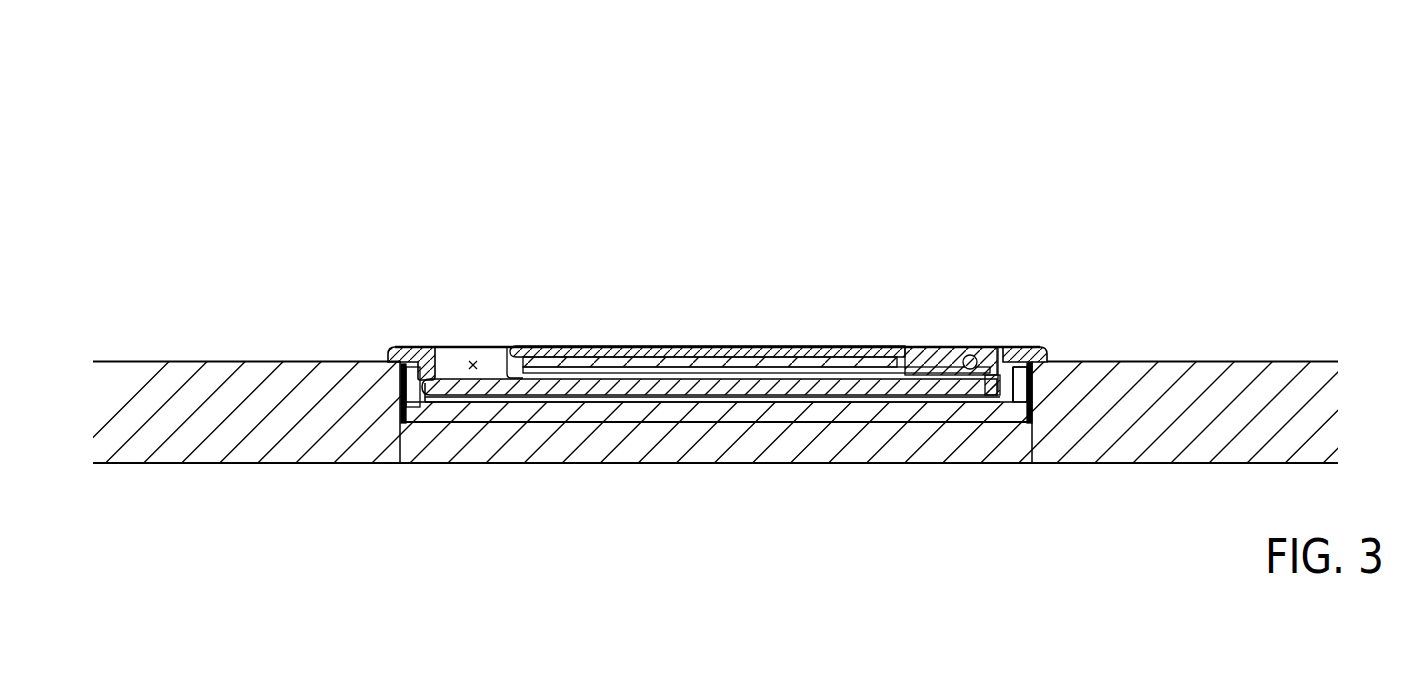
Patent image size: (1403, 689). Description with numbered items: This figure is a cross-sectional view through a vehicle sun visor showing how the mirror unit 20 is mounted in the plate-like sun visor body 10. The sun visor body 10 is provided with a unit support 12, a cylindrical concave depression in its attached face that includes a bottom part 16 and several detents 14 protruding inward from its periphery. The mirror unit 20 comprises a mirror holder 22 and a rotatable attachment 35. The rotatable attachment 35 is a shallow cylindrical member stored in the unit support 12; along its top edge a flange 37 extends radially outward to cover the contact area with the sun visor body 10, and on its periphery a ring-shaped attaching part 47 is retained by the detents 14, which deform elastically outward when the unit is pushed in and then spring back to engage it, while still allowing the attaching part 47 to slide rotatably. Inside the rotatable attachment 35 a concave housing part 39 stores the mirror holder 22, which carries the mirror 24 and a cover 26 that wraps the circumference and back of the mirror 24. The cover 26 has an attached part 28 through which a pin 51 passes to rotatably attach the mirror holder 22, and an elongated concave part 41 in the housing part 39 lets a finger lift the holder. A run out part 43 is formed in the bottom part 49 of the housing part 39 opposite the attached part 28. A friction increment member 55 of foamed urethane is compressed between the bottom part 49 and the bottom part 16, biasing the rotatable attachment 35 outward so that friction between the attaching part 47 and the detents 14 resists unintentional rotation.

The sun visor body 10 is at (1216, 455).
The unit support 12 is at (1012, 398).
The detents 14 is at (400, 373).
The bottom part 16 is at (712, 415).
The mirror unit 20 is at (999, 110).
The mirror holder 22 is at (871, 280).
The mirror 24 is at (650, 360).
The cover 26 is at (735, 352).
The attached part 28 is at (945, 355).
The rotatable attachment 35 is at (455, 309).
The flange 37 is at (388, 348).
The housing part 39 is at (566, 385).
The elongated concave part 41 is at (473, 358).
The run out part 43 is at (985, 392).
The attaching part 47 is at (405, 378).
The bottom part 49 is at (850, 385).
The pin 51 is at (971, 355).
The friction increment member 55 is at (770, 400).